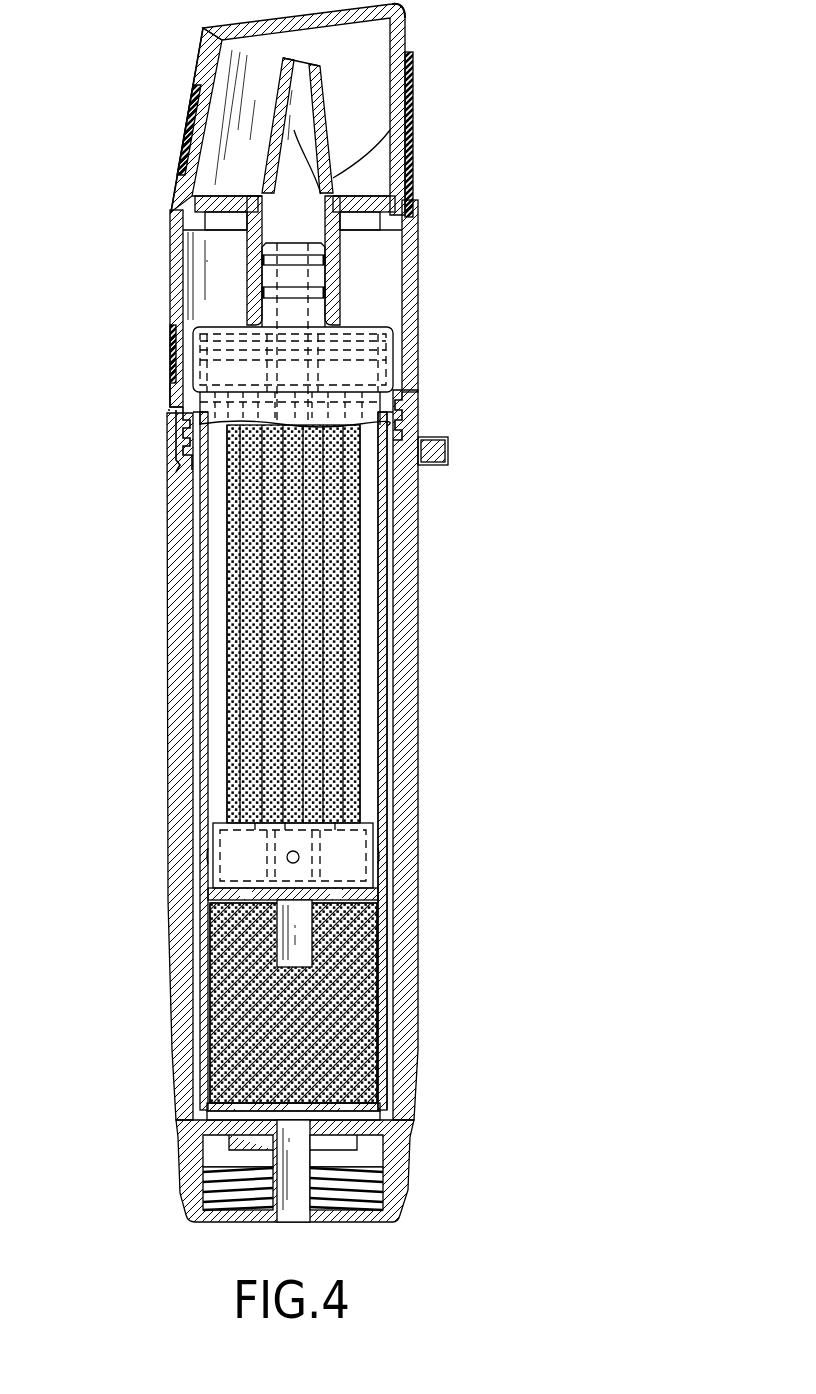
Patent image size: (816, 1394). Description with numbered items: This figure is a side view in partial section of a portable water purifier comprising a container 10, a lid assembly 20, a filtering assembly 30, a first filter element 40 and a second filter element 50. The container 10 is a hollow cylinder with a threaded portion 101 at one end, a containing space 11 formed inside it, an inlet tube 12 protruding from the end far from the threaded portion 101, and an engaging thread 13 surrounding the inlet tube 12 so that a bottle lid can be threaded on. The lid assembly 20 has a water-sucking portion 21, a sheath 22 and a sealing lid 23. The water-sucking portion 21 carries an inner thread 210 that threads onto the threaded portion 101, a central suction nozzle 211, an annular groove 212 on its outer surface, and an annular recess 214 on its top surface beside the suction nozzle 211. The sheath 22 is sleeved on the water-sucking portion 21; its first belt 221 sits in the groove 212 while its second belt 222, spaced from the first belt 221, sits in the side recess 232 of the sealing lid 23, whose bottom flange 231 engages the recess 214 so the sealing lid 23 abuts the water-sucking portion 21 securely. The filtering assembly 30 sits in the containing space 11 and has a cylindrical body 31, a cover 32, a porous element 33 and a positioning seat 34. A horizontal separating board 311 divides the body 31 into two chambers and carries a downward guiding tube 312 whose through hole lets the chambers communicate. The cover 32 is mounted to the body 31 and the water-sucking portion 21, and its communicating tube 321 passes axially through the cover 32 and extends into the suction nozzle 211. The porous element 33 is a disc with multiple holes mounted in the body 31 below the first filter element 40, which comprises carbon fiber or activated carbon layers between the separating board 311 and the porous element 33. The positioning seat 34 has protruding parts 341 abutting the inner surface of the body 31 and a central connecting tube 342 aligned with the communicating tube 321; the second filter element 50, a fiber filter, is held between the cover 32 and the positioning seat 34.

The container 10 is at (160, 623).
The containing space 11 is at (479, 593).
The inlet tube 12 is at (272, 1215).
The engaging thread 13 is at (350, 1192).
The lid assembly 20 is at (115, 302).
The water-sucking portion 21 is at (165, 253).
The sheath 22 is at (418, 106).
The sealing lid 23 is at (420, 33).
The filtering assembly 30 is at (390, 540).
The body 31 is at (390, 697).
The cover 32 is at (396, 352).
The porous element 33 is at (381, 1106).
The positioning seat 34 is at (216, 845).
The first filter element 40 is at (356, 1046).
The second filter element 50 is at (347, 612).
The threaded portion 101 is at (181, 470).
The inner thread 210 is at (181, 430).
The suction nozzle 211 is at (283, 75).
The groove 212 is at (176, 368).
The recess 214 is at (186, 214).
The first belt 221 is at (175, 334).
The second belt 222 is at (182, 142).
The bottom flange 231 is at (404, 182).
The side recess 232 is at (188, 112).
The separating board 311 is at (372, 905).
The guiding tube 312 is at (276, 932).
The communicating tube 321 is at (323, 270).
The protruding parts 341 is at (376, 852).
The connecting tube 342 is at (272, 836).